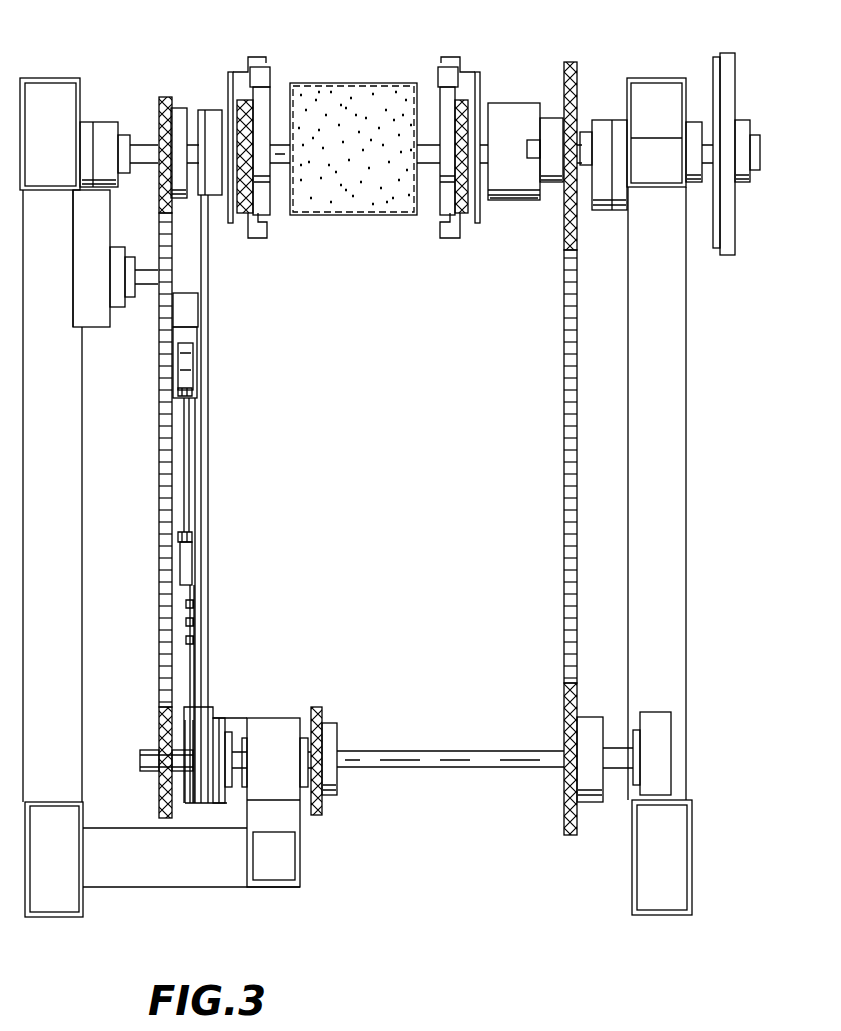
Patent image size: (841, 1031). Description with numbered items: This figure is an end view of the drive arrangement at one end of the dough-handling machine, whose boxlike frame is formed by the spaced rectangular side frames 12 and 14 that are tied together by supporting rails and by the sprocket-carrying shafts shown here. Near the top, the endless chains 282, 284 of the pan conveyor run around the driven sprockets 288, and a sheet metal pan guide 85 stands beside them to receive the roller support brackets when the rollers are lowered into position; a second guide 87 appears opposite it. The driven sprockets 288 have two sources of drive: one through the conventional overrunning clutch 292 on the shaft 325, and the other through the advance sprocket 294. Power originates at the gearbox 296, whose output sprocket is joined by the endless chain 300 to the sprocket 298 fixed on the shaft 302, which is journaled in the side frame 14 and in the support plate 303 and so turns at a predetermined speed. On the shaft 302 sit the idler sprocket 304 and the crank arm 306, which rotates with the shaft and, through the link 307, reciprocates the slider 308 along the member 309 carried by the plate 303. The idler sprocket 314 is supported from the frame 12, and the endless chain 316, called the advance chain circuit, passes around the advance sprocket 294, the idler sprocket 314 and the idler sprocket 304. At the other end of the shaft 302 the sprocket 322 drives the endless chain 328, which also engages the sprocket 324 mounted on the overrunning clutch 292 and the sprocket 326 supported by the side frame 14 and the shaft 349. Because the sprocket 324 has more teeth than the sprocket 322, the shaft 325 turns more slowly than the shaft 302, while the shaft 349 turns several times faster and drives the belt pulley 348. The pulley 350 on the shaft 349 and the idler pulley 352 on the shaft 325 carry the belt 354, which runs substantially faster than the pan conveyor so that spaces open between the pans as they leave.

The side frame 12 is at (83, 897).
The side frame 14 is at (632, 852).
The sheet metal pan guide 85 is at (254, 60).
The right clutch bracket 87 is at (444, 62).
The endless chain 282 is at (462, 215).
The endless chain 284 is at (250, 212).
The driven sprocket 288 is at (440, 127).
The overrunning clutch 292 is at (536, 105).
The advance sprocket 294 is at (163, 95).
The gearbox 296 is at (235, 712).
The sprocket 298 is at (318, 710).
The endless chain 300 is at (320, 815).
The shaft 302 is at (458, 749).
The support plate 303 is at (210, 415).
The idler sprocket 304 is at (167, 818).
The crank arm 306 is at (195, 640).
The link 307 is at (190, 505).
The slider 308 is at (192, 362).
The member 309 is at (188, 537).
The idler sprocket 314 is at (160, 308).
The endless chain 316 is at (160, 600).
The sprocket 322 is at (566, 712).
The sprocket 324 is at (568, 62).
The shaft 325 is at (282, 157).
The sprocket 326 is at (552, 170).
The endless chain 328 is at (565, 428).
The belt pulley 348 is at (375, 215).
The shaft 349 is at (755, 158).
The pulley 350 is at (712, 100).
The idler pulley 352 is at (715, 56).
The belt 354 is at (718, 50).